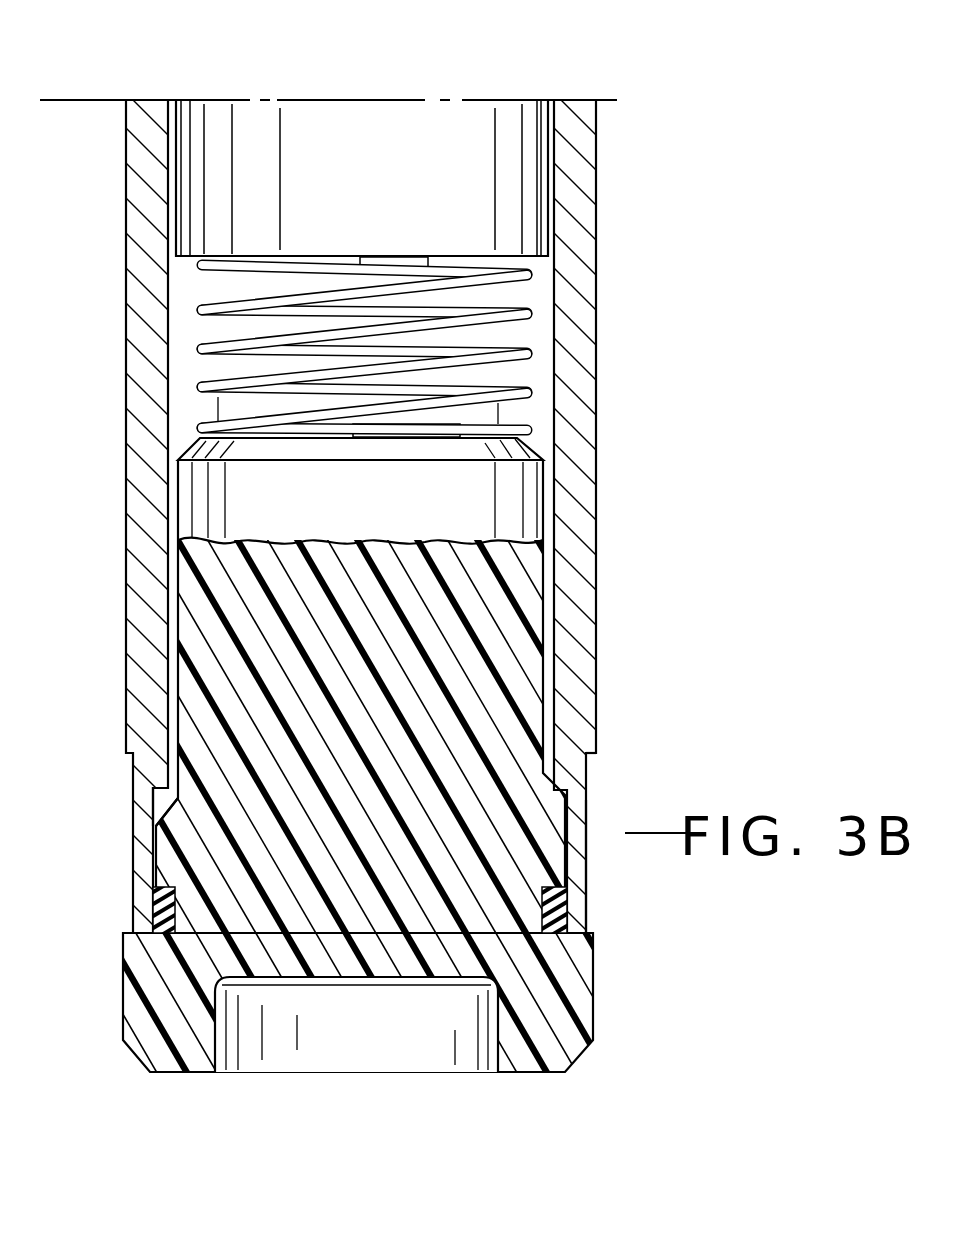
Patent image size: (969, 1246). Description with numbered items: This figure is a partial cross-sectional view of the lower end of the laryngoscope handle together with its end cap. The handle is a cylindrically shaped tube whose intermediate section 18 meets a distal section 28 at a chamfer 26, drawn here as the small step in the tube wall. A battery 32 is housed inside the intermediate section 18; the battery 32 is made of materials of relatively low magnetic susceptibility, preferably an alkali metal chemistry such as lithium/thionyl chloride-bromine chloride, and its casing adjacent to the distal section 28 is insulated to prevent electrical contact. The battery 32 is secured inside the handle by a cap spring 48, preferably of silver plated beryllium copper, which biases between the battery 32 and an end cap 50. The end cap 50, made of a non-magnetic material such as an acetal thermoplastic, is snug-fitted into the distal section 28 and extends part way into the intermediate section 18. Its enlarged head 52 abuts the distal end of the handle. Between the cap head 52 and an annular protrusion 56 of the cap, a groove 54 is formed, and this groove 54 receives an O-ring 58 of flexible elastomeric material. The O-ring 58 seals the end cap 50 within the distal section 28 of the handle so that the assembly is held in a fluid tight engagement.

The intermediate section 18 is at (596, 382).
The chamfer 26 is at (592, 762).
The distal section 28 is at (586, 868).
The battery 32 is at (465, 135).
The cap spring 48 is at (527, 313).
The end cap 50 is at (518, 632).
The enlarged head 52 is at (567, 1020).
The groove 54 is at (180, 887).
The annular protrusion 56 is at (163, 847).
The O-ring 58 is at (152, 905).